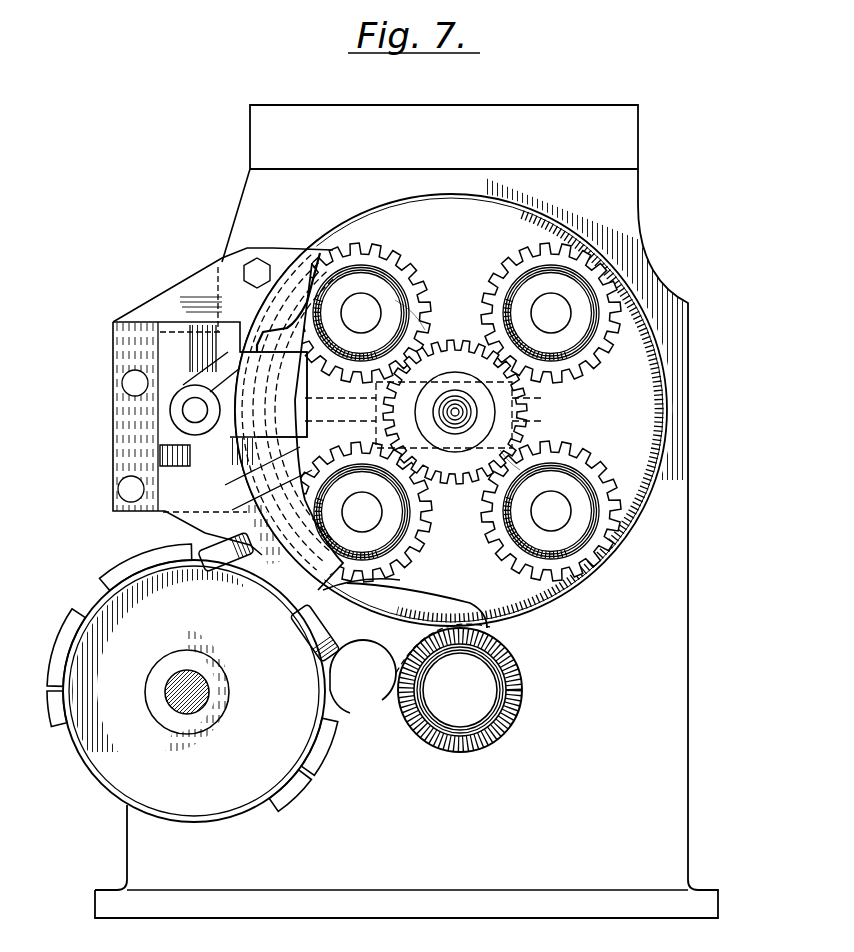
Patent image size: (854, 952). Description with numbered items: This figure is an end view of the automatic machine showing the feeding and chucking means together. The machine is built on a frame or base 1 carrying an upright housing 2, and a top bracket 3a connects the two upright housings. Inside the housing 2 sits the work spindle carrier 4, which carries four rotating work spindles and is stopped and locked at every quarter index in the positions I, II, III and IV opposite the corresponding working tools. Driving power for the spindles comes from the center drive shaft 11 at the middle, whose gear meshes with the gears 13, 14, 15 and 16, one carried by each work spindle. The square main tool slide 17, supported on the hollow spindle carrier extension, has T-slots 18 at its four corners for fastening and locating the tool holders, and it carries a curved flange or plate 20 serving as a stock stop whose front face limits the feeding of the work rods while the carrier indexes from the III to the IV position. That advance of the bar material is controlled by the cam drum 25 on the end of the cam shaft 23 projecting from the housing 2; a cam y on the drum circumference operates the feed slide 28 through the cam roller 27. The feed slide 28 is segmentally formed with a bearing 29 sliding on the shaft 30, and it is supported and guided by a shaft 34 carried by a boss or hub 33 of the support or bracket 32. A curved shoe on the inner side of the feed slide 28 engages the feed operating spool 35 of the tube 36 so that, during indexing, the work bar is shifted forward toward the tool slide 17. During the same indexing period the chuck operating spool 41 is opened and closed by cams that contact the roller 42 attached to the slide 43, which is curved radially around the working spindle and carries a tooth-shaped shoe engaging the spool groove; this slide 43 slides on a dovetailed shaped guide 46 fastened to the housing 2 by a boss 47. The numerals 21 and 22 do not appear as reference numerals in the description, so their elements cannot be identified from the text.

The frame or base 1 is at (685, 862).
The upright housing 2 is at (629, 185).
The top bracket 3a is at (266, 122).
The work spindle carrier 4 is at (658, 420).
The center drive shaft 11 is at (453, 416).
The gear 13 is at (407, 583).
The gear 14 is at (348, 244).
The gear 15 is at (619, 281).
The gear 16 is at (606, 562).
The main tool slide 17 is at (531, 400).
The T-slots 18 is at (443, 340).
The curved flange or plate (stock stop) 20 is at (268, 415).
The wheel 21 is at (105, 577).
The segment 22 is at (58, 716).
The cam shaft 23 is at (209, 694).
The cam drum 25 is at (238, 788).
The cam roller 27 is at (350, 712).
The feed slide 28 is at (373, 647).
The bearing 29 is at (515, 722).
The shaft 30 is at (487, 680).
The support or bracket 32 is at (200, 372).
The boss or hub 33 is at (174, 427).
The shaft 34 is at (187, 409).
The feed operating spool 35 is at (418, 558).
The tube 36 is at (378, 515).
The chuck operating spool 41 is at (549, 462).
The roller 42 is at (269, 597).
The slide 43 is at (175, 520).
The dovetailed shaped guide 46 is at (218, 370).
The boss 47 is at (104, 381).
The position I is at (566, 498).
The position II is at (568, 300).
The position III is at (377, 308).
The position IV is at (360, 548).
The cam Y y is at (318, 733).